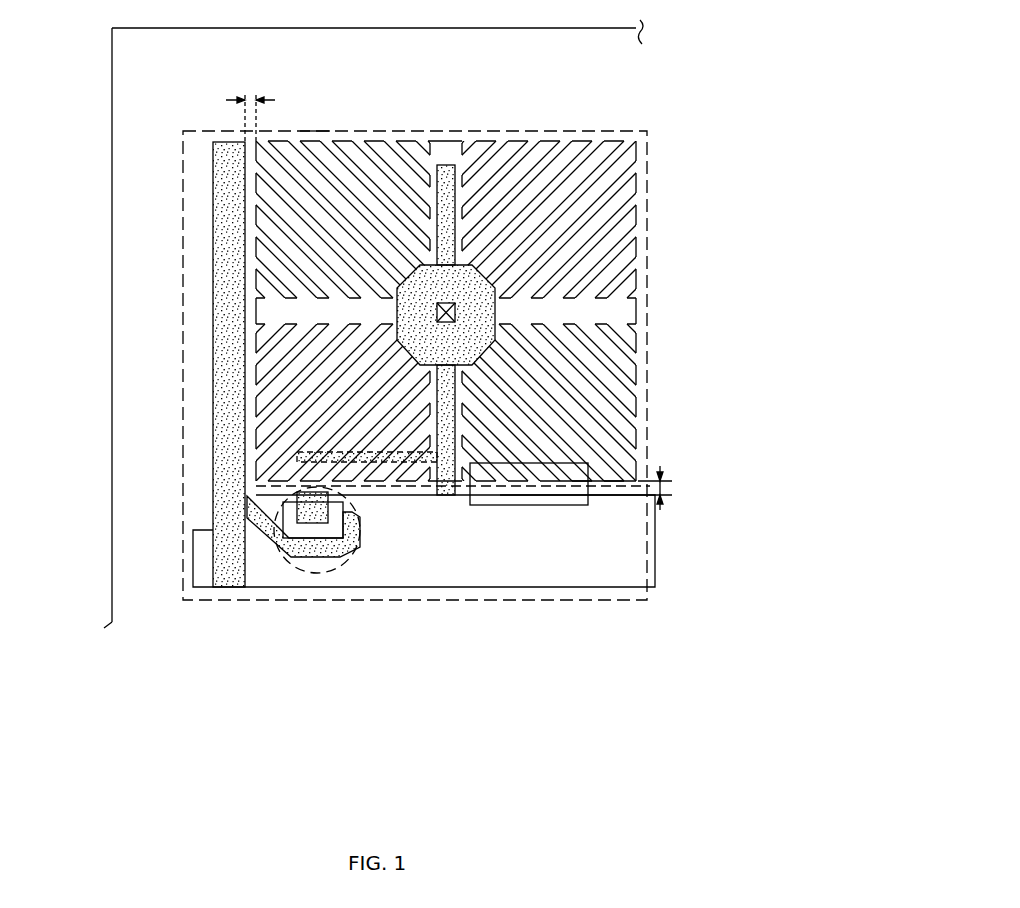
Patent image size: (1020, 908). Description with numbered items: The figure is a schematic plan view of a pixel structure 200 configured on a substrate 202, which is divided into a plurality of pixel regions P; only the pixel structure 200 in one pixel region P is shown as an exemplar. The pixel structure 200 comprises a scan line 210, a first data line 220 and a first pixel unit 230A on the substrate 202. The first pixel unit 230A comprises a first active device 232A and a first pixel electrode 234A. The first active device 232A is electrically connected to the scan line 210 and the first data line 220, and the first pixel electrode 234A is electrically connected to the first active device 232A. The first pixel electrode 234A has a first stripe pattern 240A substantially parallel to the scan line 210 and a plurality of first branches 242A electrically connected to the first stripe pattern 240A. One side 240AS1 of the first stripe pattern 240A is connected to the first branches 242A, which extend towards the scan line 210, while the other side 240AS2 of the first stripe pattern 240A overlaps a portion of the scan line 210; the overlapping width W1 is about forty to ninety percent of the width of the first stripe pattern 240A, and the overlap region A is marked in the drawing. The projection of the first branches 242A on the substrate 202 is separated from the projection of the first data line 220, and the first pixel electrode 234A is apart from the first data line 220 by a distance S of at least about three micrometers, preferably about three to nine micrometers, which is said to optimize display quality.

The pixel structure 200 is at (662, 724).
The substrate 202 is at (125, 213).
The scan line 210 is at (298, 588).
The first data line 220 is at (226, 300).
The first pixel unit 230A is at (662, 238).
The first active device 232A is at (372, 548).
The first pixel electrode 234A is at (432, 164).
The first stripe pattern 240A is at (627, 478).
The first side of scan line 240AS1 is at (594, 476).
The other side of the first stripe pattern 240AS2 is at (578, 498).
The first branches 242A is at (548, 130).
The region A is at (530, 506).
The overlapping width W1 is at (681, 488).
The distance S is at (250, 102).
The pixel region P is at (314, 130).